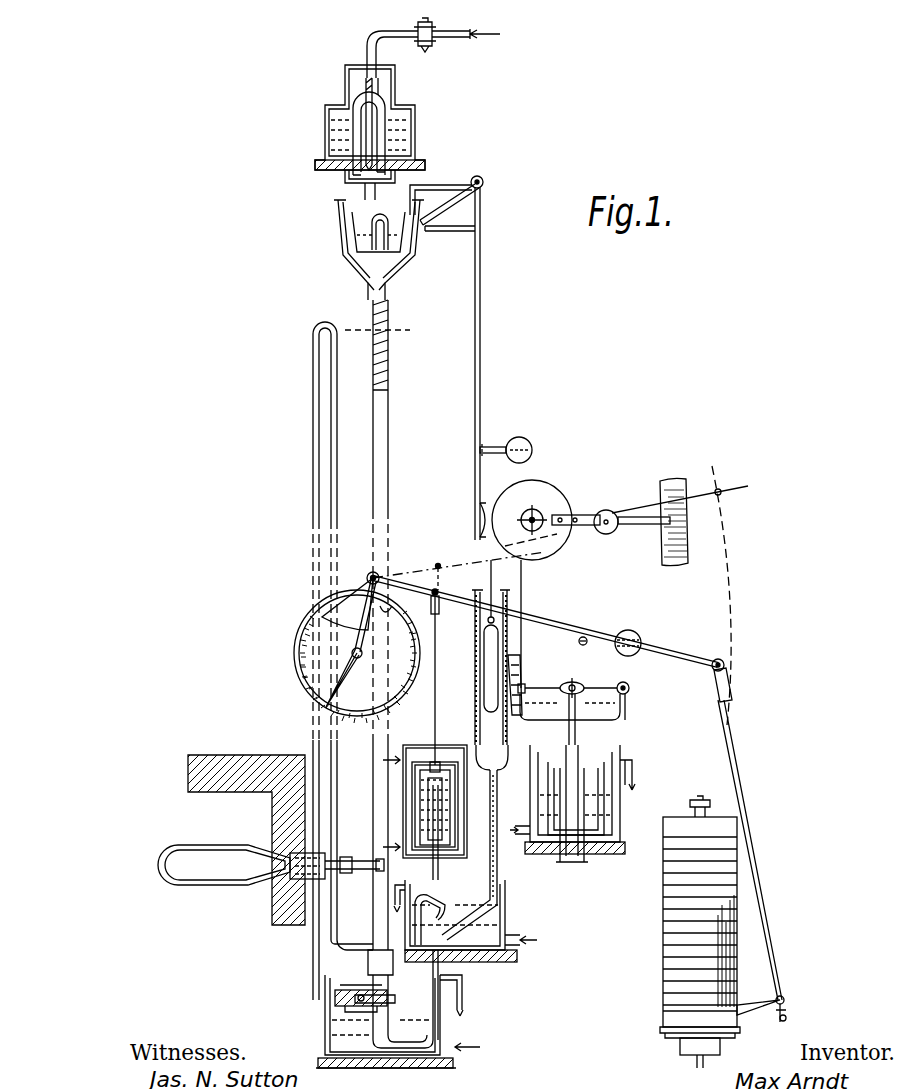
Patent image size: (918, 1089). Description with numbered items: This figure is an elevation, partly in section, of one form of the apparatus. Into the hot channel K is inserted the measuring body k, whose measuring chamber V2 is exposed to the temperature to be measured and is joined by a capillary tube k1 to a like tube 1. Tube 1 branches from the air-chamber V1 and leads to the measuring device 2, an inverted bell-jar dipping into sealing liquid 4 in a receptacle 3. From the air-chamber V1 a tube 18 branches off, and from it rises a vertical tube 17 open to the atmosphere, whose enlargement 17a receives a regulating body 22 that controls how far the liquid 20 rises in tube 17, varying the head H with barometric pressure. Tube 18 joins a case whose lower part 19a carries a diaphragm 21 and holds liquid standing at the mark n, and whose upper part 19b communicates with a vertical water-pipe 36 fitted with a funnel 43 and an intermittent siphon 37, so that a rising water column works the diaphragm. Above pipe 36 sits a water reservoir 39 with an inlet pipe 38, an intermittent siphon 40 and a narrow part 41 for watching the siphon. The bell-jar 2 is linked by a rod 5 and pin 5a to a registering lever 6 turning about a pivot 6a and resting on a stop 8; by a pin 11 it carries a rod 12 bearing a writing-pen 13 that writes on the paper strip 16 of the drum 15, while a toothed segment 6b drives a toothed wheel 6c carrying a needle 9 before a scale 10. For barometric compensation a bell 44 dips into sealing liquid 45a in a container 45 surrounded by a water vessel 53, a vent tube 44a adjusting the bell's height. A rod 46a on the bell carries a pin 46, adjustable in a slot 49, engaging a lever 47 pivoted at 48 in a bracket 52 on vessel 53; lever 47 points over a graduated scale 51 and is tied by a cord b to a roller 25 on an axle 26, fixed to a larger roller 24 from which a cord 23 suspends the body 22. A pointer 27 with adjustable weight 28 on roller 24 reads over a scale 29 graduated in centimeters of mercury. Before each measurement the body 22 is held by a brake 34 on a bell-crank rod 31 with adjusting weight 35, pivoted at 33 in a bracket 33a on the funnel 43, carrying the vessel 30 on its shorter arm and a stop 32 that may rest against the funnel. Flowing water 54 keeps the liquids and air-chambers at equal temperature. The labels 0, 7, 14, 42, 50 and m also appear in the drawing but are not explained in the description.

The inlet pipe 38 is at (433, 52).
The constriction 41 is at (370, 132).
The reservoir 39 is at (383, 133).
The intermittent siphon 40 is at (360, 125).
The vessel 30 is at (379, 250).
The inner cup with U-tube 42 is at (378, 232).
The funnel 43 is at (362, 266).
The bell-crank rod 31 is at (462, 185).
The pivot 33 is at (487, 173).
The bracket 33a is at (449, 204).
The stop 32 is at (455, 233).
The vertical water-pipe 36 is at (390, 405).
The zero level line 0 is at (377, 323).
The intermittent siphon 37 is at (312, 406).
The needle 9 is at (357, 653).
The scale 10 is at (358, 667).
The toothed wheel 6c is at (352, 623).
The toothed segment 6b is at (350, 612).
The pivot 6a is at (456, 566).
The cord 23 is at (490, 575).
The lever 6 is at (548, 610).
The weight 7 is at (634, 641).
The stop 8 is at (585, 654).
The pin 11 is at (730, 675).
The rod 12 is at (737, 766).
The writing-pen 13 is at (761, 1002).
The strip of paper 16 is at (663, 925).
The drum 15 is at (660, 1030).
The stand 14 is at (700, 1053).
The larger roller 24 is at (532, 520).
The axle 26 is at (533, 508).
The pulley or roller 25 is at (574, 510).
The adjustable weight 28 is at (614, 512).
The arm or pointer 27 is at (640, 526).
The scale 29 is at (689, 534).
The adjusting weight 35 is at (506, 441).
The brake 34 is at (478, 521).
The head H is at (486, 667).
The regulating body 22 is at (470, 664).
The rod 5 is at (434, 720).
The pin 5a is at (445, 593).
The bracket 52 is at (523, 592).
The cord b is at (557, 573).
The lever 47 is at (539, 678).
The pin 46 is at (576, 683).
The slot 49 is at (601, 678).
The pivot 48 is at (630, 687).
The rod 46a is at (570, 707).
The outlet pipe 50 is at (632, 748).
The graduated scale 51 is at (466, 815).
The enlargement 17a is at (492, 757).
The vertical tube 17 is at (498, 803).
The capillary tube 1 is at (404, 775).
The inverted bell-jar 2 is at (412, 790).
The receptacle 3 is at (420, 805).
The sealing liquid 4 is at (428, 820).
The vessel 53 is at (466, 842).
The vessel m is at (465, 916).
The flowing water 54 is at (535, 775).
The mark n is at (456, 995).
The air-chamber V1 is at (412, 910).
The bell 44 is at (625, 805).
The vent tube 44a is at (590, 862).
The sealing liquid 45a is at (622, 828).
The container 45 is at (556, 860).
The tube 18 is at (398, 1021).
The liquid 20 is at (448, 1015).
The upper part of case 19b is at (370, 996).
The lower part of case 19a is at (356, 1000).
The diaphragm 21 is at (365, 1005).
The hot channel K is at (246, 840).
The measuring chamber V2 is at (250, 882).
The measuring body k is at (275, 848).
The capillary tube k1 is at (346, 856).